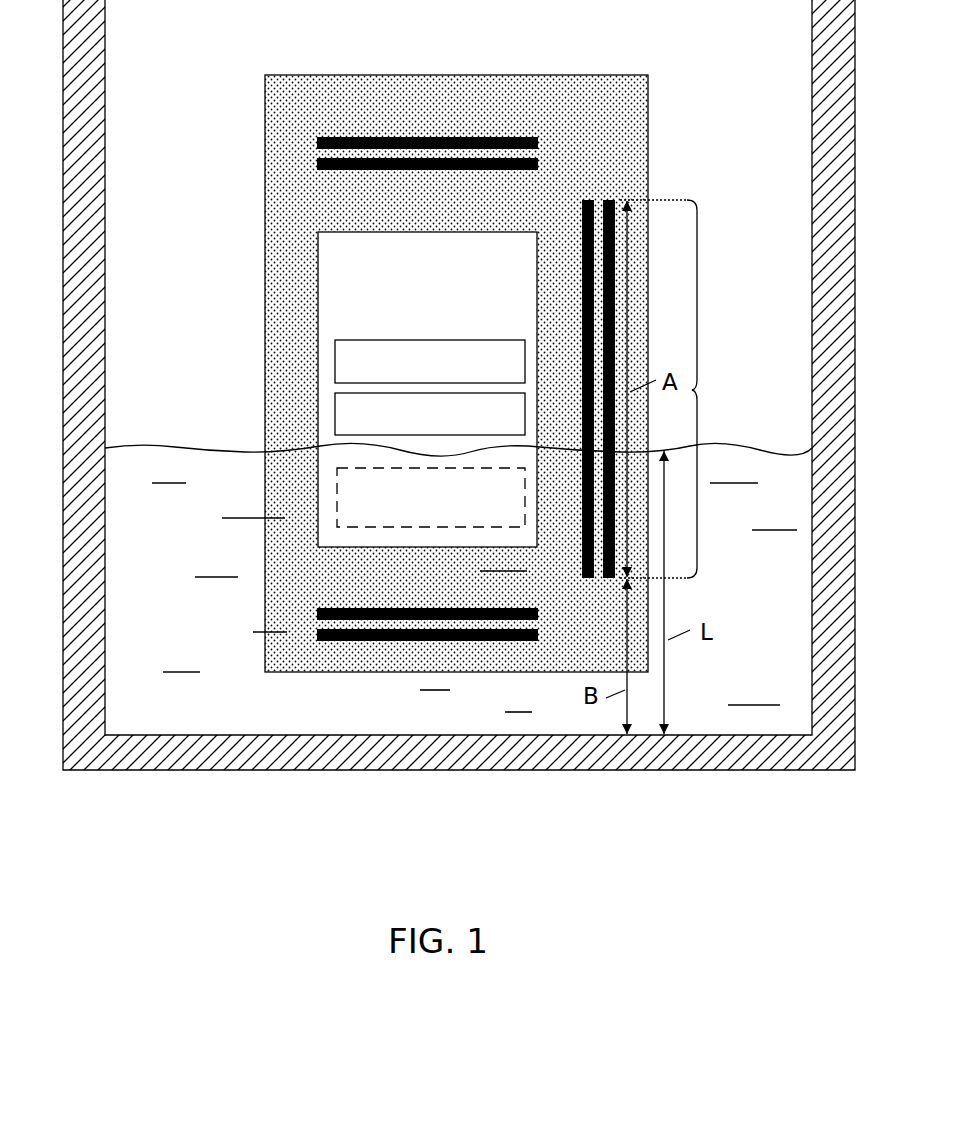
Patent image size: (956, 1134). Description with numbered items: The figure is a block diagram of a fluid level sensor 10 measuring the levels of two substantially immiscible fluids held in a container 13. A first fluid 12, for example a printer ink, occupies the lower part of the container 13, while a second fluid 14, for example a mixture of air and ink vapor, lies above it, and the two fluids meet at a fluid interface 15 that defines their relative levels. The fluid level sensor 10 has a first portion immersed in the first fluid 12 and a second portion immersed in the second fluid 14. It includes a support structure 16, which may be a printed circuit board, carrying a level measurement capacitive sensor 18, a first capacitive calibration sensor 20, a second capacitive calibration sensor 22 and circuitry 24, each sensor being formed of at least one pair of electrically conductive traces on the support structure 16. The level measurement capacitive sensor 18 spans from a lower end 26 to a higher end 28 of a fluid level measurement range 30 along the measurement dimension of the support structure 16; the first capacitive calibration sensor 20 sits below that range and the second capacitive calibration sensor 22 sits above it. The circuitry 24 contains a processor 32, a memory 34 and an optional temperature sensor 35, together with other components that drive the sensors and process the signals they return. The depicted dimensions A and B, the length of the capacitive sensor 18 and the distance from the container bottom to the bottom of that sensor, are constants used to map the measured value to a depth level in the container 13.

The fluid level sensor 10 is at (489, 373).
The first fluid 12 is at (172, 561).
The container 13 is at (63, 160).
The second fluid 14 is at (195, 355).
The fluid interface 15 is at (733, 443).
The support structure 16 is at (648, 121).
The level measurement capacitive sensor 18 is at (590, 196).
The first capacitive calibration sensor 20 is at (297, 620).
The second capacitive calibration sensor 22 is at (297, 151).
The circuitry 24 is at (392, 231).
The lower end 26 is at (580, 585).
The higher end 28 is at (617, 196).
The fluid level measurement range 30 is at (697, 262).
The processor 32 is at (390, 338).
The memory 34 is at (337, 413).
The temperature sensor 35 is at (337, 498).